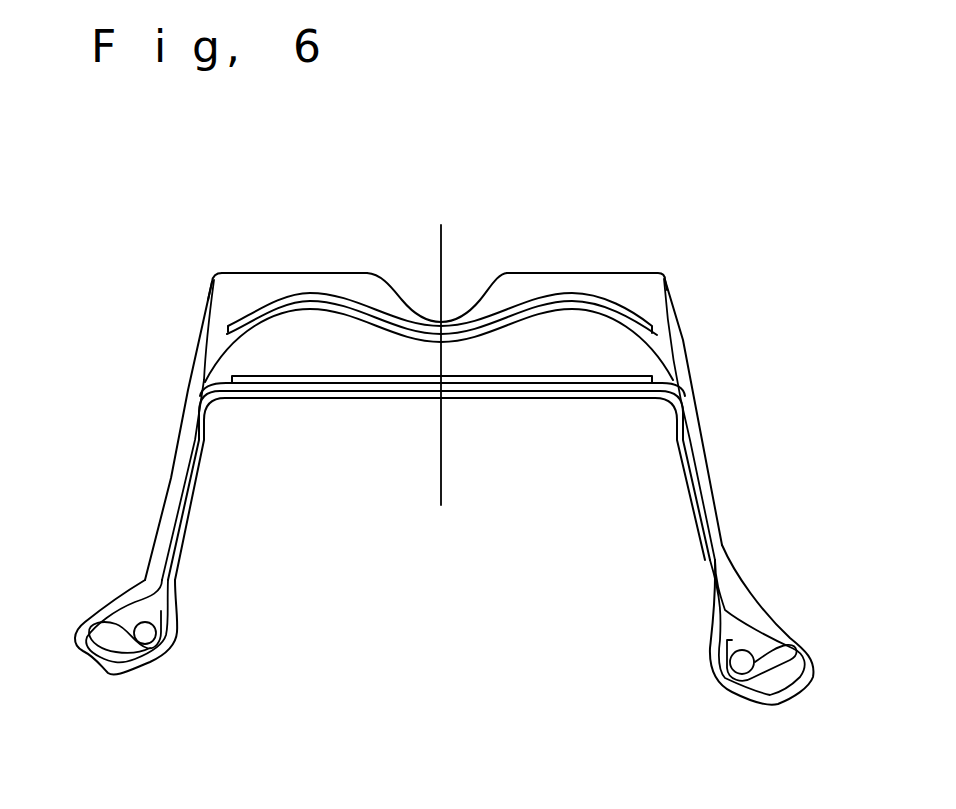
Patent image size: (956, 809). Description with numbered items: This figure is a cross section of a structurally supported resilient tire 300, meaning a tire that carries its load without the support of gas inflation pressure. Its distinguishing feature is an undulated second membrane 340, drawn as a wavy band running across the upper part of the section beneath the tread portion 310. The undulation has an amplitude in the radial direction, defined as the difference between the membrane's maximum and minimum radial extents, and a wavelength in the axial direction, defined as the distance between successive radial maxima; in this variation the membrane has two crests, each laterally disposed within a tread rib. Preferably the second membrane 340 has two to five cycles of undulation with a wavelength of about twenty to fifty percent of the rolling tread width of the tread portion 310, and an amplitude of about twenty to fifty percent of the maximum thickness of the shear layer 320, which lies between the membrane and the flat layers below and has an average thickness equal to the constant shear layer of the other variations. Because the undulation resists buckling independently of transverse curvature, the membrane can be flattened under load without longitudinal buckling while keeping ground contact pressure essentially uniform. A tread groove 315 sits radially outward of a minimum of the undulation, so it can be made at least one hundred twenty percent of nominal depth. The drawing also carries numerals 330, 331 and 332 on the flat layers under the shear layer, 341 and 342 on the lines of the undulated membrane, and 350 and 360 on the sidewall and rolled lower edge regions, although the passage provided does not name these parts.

The tire 300 is at (163, 314).
The tread portion 310 is at (280, 263).
The tread groove 315 is at (423, 293).
The shear layer 320 is at (282, 363).
The base layer 330 is at (489, 396).
The base layer lower line 331 is at (630, 387).
The base layer upper line 332 is at (568, 377).
The second membrane 340 is at (550, 281).
The ridge lower line 341 is at (659, 339).
The ridge upper line 342 is at (634, 309).
The side wall 350 is at (168, 477).
The rolled bottom edge 360 is at (116, 598).